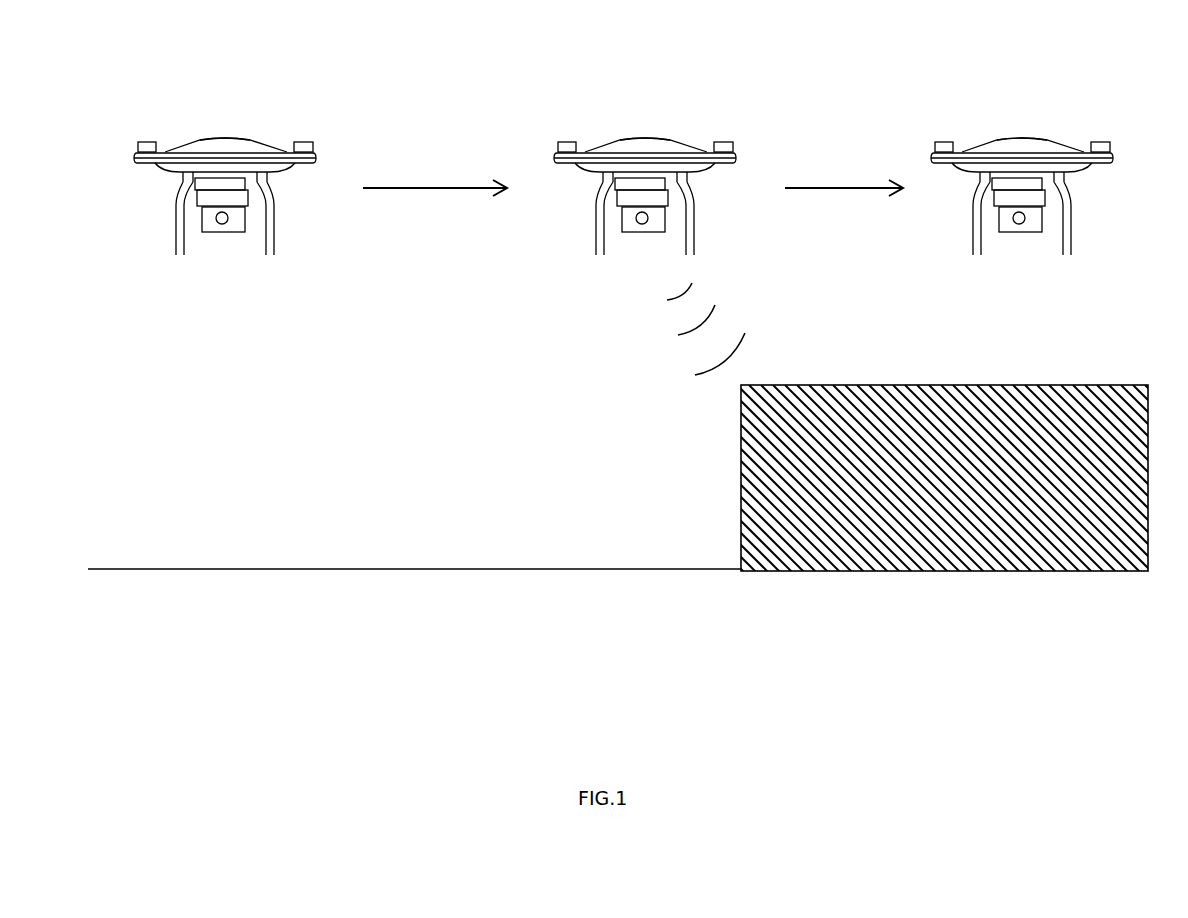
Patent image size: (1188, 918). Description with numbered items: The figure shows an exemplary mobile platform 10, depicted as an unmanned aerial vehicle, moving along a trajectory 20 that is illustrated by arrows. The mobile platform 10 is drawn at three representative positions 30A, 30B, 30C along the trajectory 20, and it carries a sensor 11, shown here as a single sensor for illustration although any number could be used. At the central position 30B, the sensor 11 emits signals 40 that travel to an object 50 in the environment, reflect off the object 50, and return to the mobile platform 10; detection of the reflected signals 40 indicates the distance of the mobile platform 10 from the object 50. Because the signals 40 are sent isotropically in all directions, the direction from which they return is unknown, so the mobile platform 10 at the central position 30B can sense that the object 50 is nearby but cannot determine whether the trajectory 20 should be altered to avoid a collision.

The mobile platform 10 is at (164, 150).
The sensor 11 is at (222, 232).
The trajectory 20 is at (437, 190).
The first representative position 30A is at (225, 137).
The central position 30B is at (645, 137).
The third representative position 30C is at (1022, 137).
The signals 40 is at (695, 375).
The object 50 is at (910, 571).